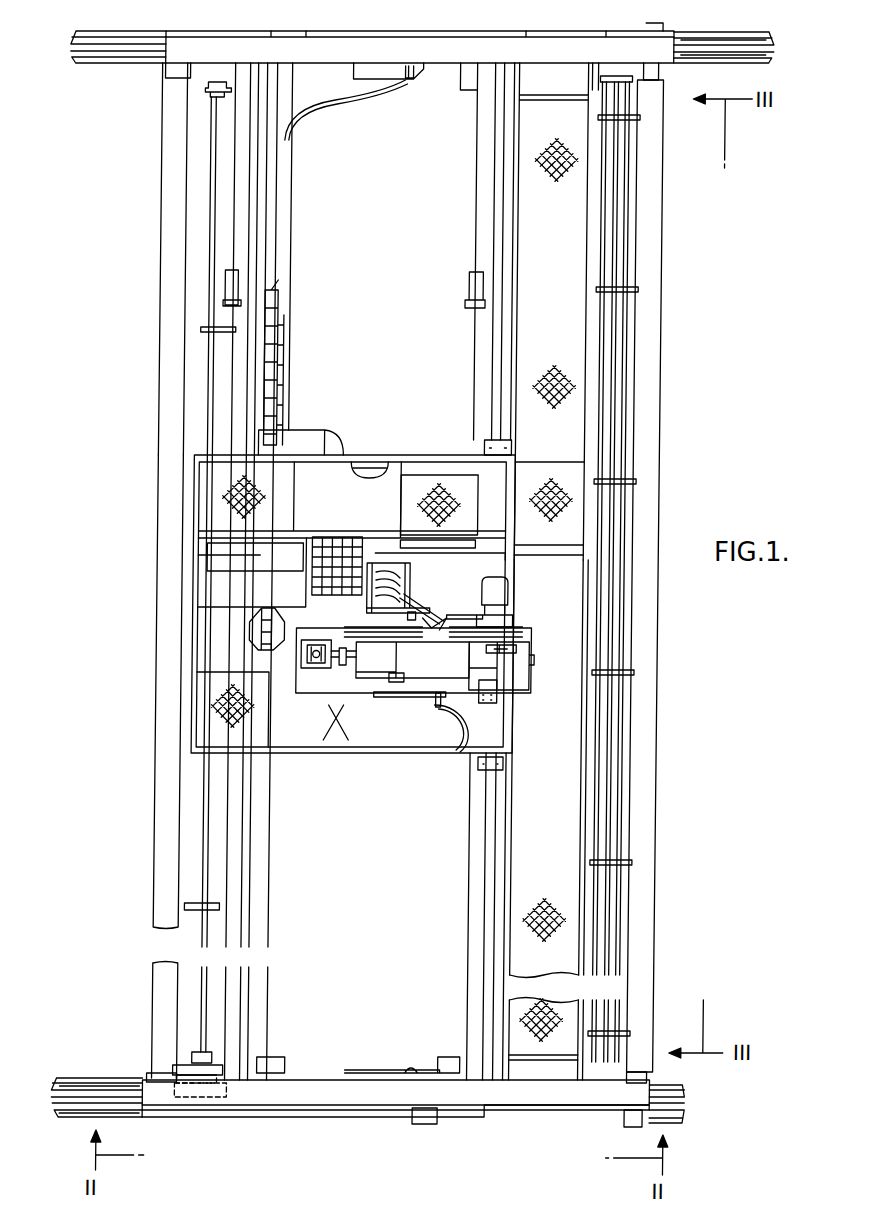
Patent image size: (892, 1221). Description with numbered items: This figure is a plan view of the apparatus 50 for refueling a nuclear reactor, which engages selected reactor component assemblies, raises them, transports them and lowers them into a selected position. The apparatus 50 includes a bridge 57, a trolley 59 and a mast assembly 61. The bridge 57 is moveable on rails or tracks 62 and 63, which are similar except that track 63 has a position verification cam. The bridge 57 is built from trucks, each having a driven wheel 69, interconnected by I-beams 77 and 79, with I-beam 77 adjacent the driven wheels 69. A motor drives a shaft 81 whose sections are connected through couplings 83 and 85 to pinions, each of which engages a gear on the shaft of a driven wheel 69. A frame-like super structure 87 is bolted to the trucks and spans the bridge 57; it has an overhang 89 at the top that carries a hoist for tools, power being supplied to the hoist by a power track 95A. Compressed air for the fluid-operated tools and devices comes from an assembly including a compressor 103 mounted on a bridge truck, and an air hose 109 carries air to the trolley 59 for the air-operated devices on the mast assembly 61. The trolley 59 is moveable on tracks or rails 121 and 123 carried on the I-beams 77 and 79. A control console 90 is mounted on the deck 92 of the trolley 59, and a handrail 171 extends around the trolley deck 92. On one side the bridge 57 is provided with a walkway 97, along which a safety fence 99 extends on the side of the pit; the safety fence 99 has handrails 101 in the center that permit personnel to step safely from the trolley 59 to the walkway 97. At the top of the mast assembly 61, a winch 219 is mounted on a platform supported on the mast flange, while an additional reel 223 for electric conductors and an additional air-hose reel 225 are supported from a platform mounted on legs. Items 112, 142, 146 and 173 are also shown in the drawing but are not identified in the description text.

The apparatus 50 is at (391, 698).
The bridge 57 is at (160, 938).
The trolley 59 is at (200, 447).
The mast assembly 61 is at (528, 662).
The track 62 is at (706, 47).
The track 63 is at (686, 1104).
The driven wheel 69 is at (235, 1092).
The I-beam 77 is at (240, 208).
The I-beam 79 is at (486, 142).
The shaft 81 is at (204, 852).
The coupling 83 is at (200, 1056).
The coupling 85 is at (203, 88).
The super structure 87 is at (660, 434).
The overhang 89 is at (557, 50).
The control console 90 is at (205, 600).
The deck 92 is at (224, 648).
The power track 95A is at (606, 772).
The walkway 97 is at (565, 833).
The safety fence 99 is at (518, 263).
The handrails 101 is at (566, 462).
The compressor 103 is at (383, 70).
The air hose 109 is at (353, 112).
The base plate 112 is at (180, 1066).
The track 121 is at (257, 261).
The track 123 is at (497, 206).
The padding blocks 142 is at (205, 489).
The grille 146 is at (312, 582).
The handrail 171 is at (405, 455).
The rack 173 is at (275, 290).
The winch 219 is at (425, 728).
The reel 223 is at (500, 621).
The air-hose reel 225 is at (360, 630).